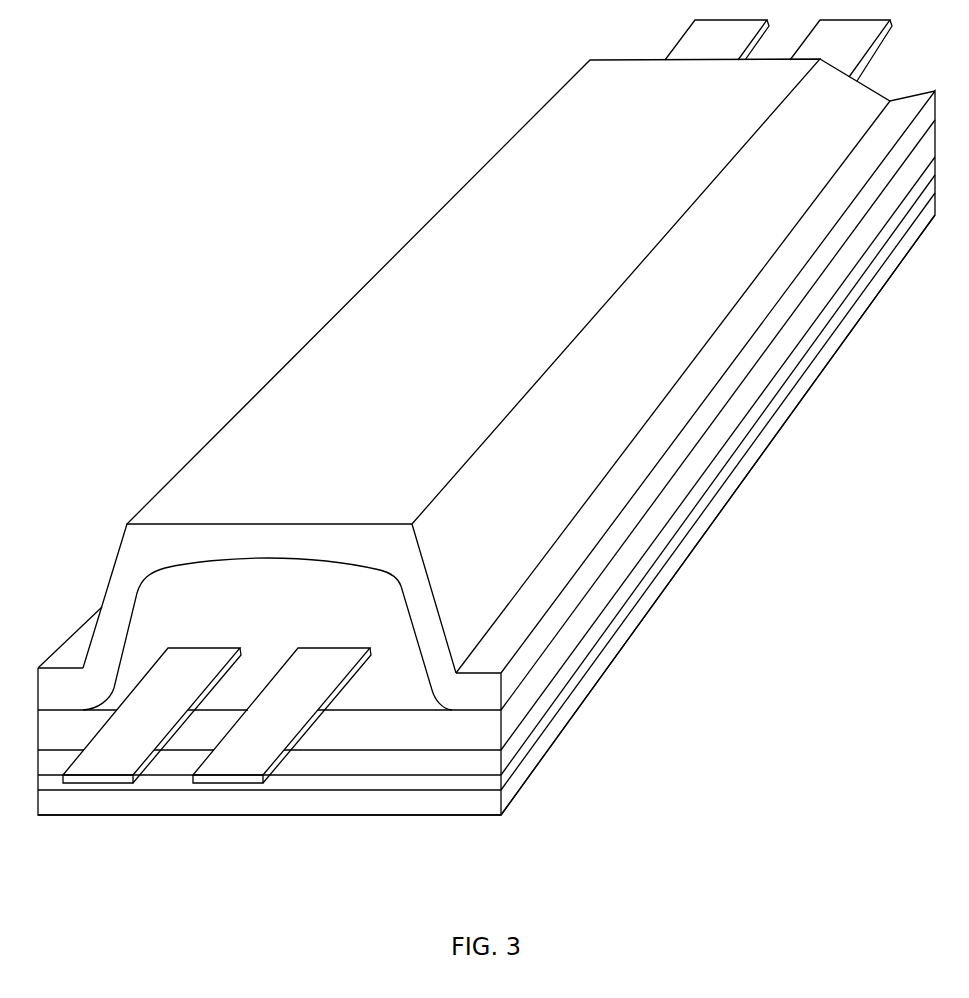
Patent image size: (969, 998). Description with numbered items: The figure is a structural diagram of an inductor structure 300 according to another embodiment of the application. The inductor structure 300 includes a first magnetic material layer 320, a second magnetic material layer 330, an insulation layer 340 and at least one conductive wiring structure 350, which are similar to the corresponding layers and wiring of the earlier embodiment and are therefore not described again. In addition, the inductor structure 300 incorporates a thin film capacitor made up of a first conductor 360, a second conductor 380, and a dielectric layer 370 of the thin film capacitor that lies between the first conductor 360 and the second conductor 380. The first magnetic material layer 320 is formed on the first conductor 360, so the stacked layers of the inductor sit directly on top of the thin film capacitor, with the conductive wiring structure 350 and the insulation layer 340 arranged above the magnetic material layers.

The inductor structure 300 is at (230, 186).
The first magnetic material layer 320 is at (486, 453).
The second magnetic material layer 330 is at (486, 416).
The insulation layer 340 is at (267, 634).
The conductive wiring structure 350 is at (217, 715).
The first conductor 360 is at (486, 475).
The dielectric layer 370 is at (486, 493).
The second conductor 380 is at (486, 515).